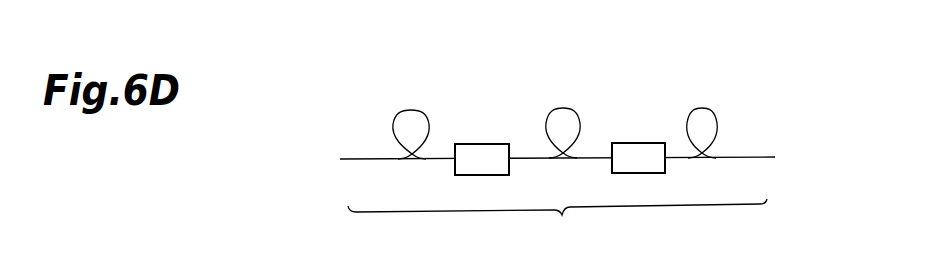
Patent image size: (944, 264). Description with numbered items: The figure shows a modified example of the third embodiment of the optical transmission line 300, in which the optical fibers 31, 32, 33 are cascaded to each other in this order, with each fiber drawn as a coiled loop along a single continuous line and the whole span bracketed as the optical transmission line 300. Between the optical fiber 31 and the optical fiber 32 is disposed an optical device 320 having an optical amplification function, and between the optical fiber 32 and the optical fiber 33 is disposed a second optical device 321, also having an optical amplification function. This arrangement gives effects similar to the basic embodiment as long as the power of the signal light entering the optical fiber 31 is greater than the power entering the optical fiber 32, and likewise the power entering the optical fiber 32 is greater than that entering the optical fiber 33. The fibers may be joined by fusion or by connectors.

The optical fiber 31 is at (425, 113).
The optical fiber 32 is at (577, 111).
The optical fiber 33 is at (715, 112).
The optical device 320 is at (480, 144).
The optical device 321 is at (642, 143).
The optical transmission line 300 is at (557, 219).